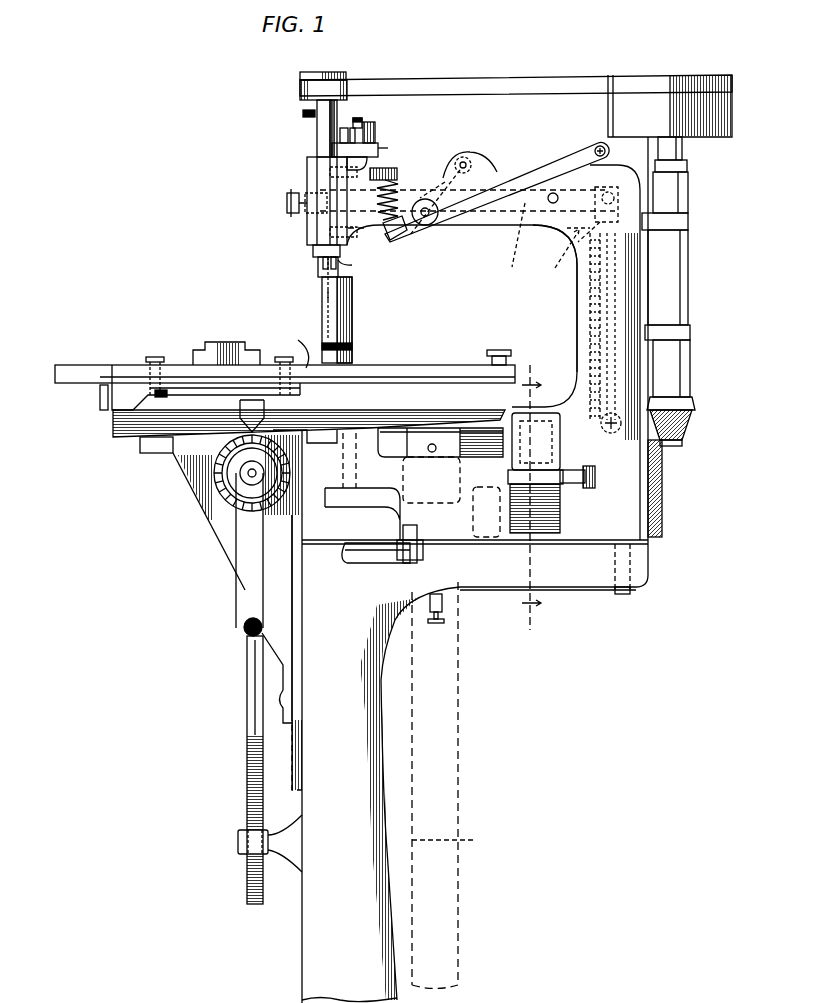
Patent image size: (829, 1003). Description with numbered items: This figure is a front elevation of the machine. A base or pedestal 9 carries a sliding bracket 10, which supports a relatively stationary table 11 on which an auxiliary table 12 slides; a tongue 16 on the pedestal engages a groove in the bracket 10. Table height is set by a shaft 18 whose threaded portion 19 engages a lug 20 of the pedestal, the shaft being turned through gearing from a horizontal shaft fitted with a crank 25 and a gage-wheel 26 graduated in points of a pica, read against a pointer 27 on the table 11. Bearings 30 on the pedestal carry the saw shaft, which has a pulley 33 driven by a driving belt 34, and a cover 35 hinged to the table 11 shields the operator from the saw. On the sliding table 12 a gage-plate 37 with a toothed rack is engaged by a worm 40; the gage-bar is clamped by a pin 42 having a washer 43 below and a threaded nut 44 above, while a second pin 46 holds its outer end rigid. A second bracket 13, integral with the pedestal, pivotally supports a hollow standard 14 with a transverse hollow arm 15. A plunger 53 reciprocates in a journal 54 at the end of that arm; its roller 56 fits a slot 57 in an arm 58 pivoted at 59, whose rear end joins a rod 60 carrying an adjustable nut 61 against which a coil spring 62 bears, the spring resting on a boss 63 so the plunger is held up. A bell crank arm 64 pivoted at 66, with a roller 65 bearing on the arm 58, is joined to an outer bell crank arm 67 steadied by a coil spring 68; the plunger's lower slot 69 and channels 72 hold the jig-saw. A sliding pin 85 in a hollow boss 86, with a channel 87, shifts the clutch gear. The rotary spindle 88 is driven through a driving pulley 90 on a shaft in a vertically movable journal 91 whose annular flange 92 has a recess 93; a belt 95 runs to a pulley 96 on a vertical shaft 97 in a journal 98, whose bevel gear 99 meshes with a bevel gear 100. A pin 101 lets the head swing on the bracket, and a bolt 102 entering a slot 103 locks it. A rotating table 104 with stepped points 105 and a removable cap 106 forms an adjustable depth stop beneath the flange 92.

The base or pedestal 9 is at (436, 670).
The sliding bracket 10 is at (198, 518).
The relatively stationary table 11 is at (153, 403).
The auxiliary table 12 is at (128, 387).
The second bracket 13 is at (583, 578).
The hollow standard 14 is at (582, 300).
The hollow arm 15 is at (540, 226).
The tongue 16 is at (298, 745).
The shaft 18 is at (247, 766).
The threaded portion 19 is at (250, 886).
The lug 20 is at (240, 843).
The crank 25 is at (250, 583).
The gage-wheel 26 is at (223, 478).
The pointer 27 is at (217, 483).
The bearings 30 is at (474, 440).
The pulley 33 is at (423, 435).
The driving belt 34 is at (455, 845).
The cover 35 is at (352, 318).
The gage-plate 37 is at (83, 368).
The worm 40 is at (237, 347).
The pin 42 is at (290, 363).
The washer 43 is at (312, 440).
The threaded nut 44 is at (307, 340).
The second pin 46 is at (150, 363).
The plunger 53 is at (317, 136).
The journal 54 is at (307, 168).
The roller 56 is at (327, 202).
The slot 57 is at (287, 203).
The arm 58 is at (507, 244).
The pivot 59 is at (558, 196).
The rod 60 is at (620, 212).
The adjustable nut 61 is at (607, 427).
The coil spring 62 is at (590, 338).
The boss or projection 63 is at (563, 256).
The arm 64 is at (462, 158).
The roller 65 is at (480, 168).
The pivot 66 is at (426, 226).
The bell crank arm 67 is at (505, 192).
The coil spring 68 is at (393, 182).
The slot 69 is at (322, 262).
The channels 72 is at (340, 252).
The sliding pin 85 is at (583, 484).
The hollow boss 86 is at (355, 345).
The channel 87 is at (340, 265).
The spindle 88 is at (320, 288).
The driving pulley 90 is at (300, 76).
The journal 91 is at (340, 128).
The annular flange 92 is at (303, 113).
The recess 93 is at (622, 594).
The belt 95 is at (510, 78).
The pulley 96 is at (712, 138).
The vertically extending shaft 97 is at (675, 441).
The journal 98 is at (690, 345).
The bevel gear 99 is at (693, 425).
The bevel gear 100 is at (662, 525).
The pin 101 is at (625, 572).
The bolt 102 is at (417, 555).
The slot 103 is at (358, 560).
The rotating table 104 is at (388, 148).
The points or projections 105 is at (378, 136).
The removable cap 106 is at (362, 125).